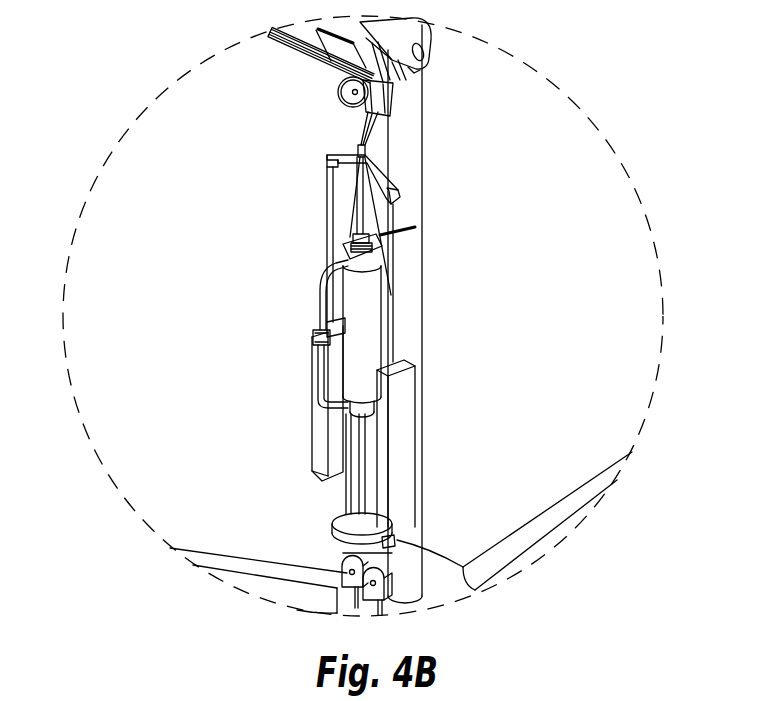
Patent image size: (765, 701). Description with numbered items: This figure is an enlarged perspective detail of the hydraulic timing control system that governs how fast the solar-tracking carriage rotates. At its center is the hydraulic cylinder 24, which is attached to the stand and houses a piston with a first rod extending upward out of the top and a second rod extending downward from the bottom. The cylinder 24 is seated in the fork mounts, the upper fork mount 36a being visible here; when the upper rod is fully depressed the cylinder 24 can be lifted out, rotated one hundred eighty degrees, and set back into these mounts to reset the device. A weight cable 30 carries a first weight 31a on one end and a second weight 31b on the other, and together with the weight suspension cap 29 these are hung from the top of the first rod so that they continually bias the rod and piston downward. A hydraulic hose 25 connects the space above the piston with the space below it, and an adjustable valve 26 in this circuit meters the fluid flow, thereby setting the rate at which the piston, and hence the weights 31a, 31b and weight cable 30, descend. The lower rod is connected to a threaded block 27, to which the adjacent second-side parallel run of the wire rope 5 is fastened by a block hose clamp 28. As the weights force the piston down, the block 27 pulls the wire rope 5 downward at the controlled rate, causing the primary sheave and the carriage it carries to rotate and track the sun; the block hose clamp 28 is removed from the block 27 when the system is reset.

The wire rope 5 is at (356, 206).
The cylinder 24 is at (370, 327).
The hydraulic hose 25 is at (318, 305).
The valve 26 is at (317, 350).
The threaded block 27 is at (340, 520).
The block hose clamp 28 is at (390, 541).
The weight suspension cap 29 is at (400, 184).
The weight cable 30 is at (327, 247).
The first weight 31a is at (317, 433).
The second weight 31b is at (407, 443).
The upper fork mount 36a is at (407, 224).